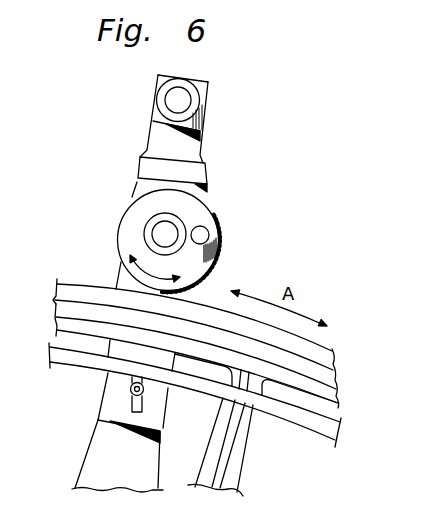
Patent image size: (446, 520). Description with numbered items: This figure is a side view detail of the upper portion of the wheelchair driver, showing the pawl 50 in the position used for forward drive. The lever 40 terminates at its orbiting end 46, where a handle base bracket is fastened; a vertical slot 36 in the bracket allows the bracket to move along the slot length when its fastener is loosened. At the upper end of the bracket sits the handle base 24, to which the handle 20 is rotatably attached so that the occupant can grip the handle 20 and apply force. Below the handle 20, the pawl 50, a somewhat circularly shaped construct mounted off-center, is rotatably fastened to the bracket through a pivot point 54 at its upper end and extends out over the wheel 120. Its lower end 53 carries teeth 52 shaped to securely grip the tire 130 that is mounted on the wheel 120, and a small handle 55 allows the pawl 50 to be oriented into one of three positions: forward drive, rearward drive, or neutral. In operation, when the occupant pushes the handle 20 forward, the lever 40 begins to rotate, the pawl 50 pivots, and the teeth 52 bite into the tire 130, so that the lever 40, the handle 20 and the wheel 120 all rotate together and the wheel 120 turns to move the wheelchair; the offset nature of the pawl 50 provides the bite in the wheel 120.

The handle 20 is at (182, 104).
The handle base 24 is at (180, 150).
The pawl 50 is at (132, 242).
The pivot point 54 is at (165, 234).
The handle 55 is at (200, 235).
The teeth 52 is at (218, 253).
The lower end 53 is at (208, 280).
The tire 130 is at (110, 297).
The lever 40 is at (87, 313).
The wheel 120 is at (98, 357).
The vertical slot 36 is at (103, 421).
The orbiting end 46 is at (107, 453).